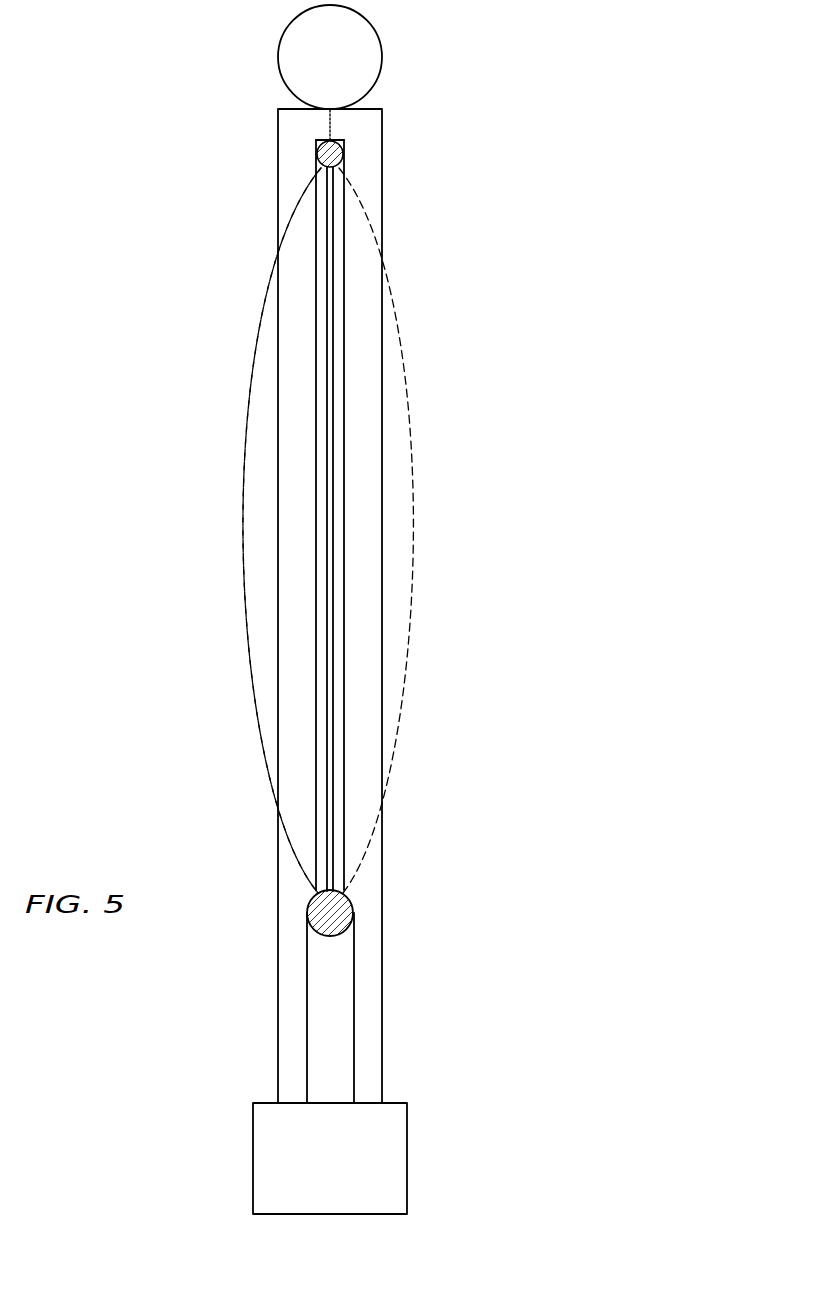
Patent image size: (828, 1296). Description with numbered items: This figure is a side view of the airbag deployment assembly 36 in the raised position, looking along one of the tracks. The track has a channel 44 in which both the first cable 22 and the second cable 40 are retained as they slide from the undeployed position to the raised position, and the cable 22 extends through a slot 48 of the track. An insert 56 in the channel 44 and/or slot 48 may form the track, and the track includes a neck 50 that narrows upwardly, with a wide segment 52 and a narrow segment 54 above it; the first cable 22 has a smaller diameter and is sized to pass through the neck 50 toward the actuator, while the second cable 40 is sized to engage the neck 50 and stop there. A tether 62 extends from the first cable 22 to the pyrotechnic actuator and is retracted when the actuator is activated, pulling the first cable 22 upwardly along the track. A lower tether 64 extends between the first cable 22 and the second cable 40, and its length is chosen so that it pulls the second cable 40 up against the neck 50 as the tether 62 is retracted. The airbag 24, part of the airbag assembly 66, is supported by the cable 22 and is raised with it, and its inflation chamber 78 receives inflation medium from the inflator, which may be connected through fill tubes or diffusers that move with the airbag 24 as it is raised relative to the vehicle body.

The first cable 22 is at (341, 167).
The airbag 24 is at (254, 338).
The airbag deployment assembly 36 is at (388, 1063).
The second cable 40 is at (333, 937).
The channel 44 is at (278, 130).
The slot 48 is at (345, 310).
The neck 50 is at (336, 900).
The wide segment 52 is at (354, 1010).
The narrow segment 54 is at (344, 804).
The insert 56 is at (345, 467).
The tether 62 is at (334, 126).
The lower tether 64 is at (333, 735).
The airbag assembly 66 is at (244, 435).
The inflation chamber 78 is at (398, 560).